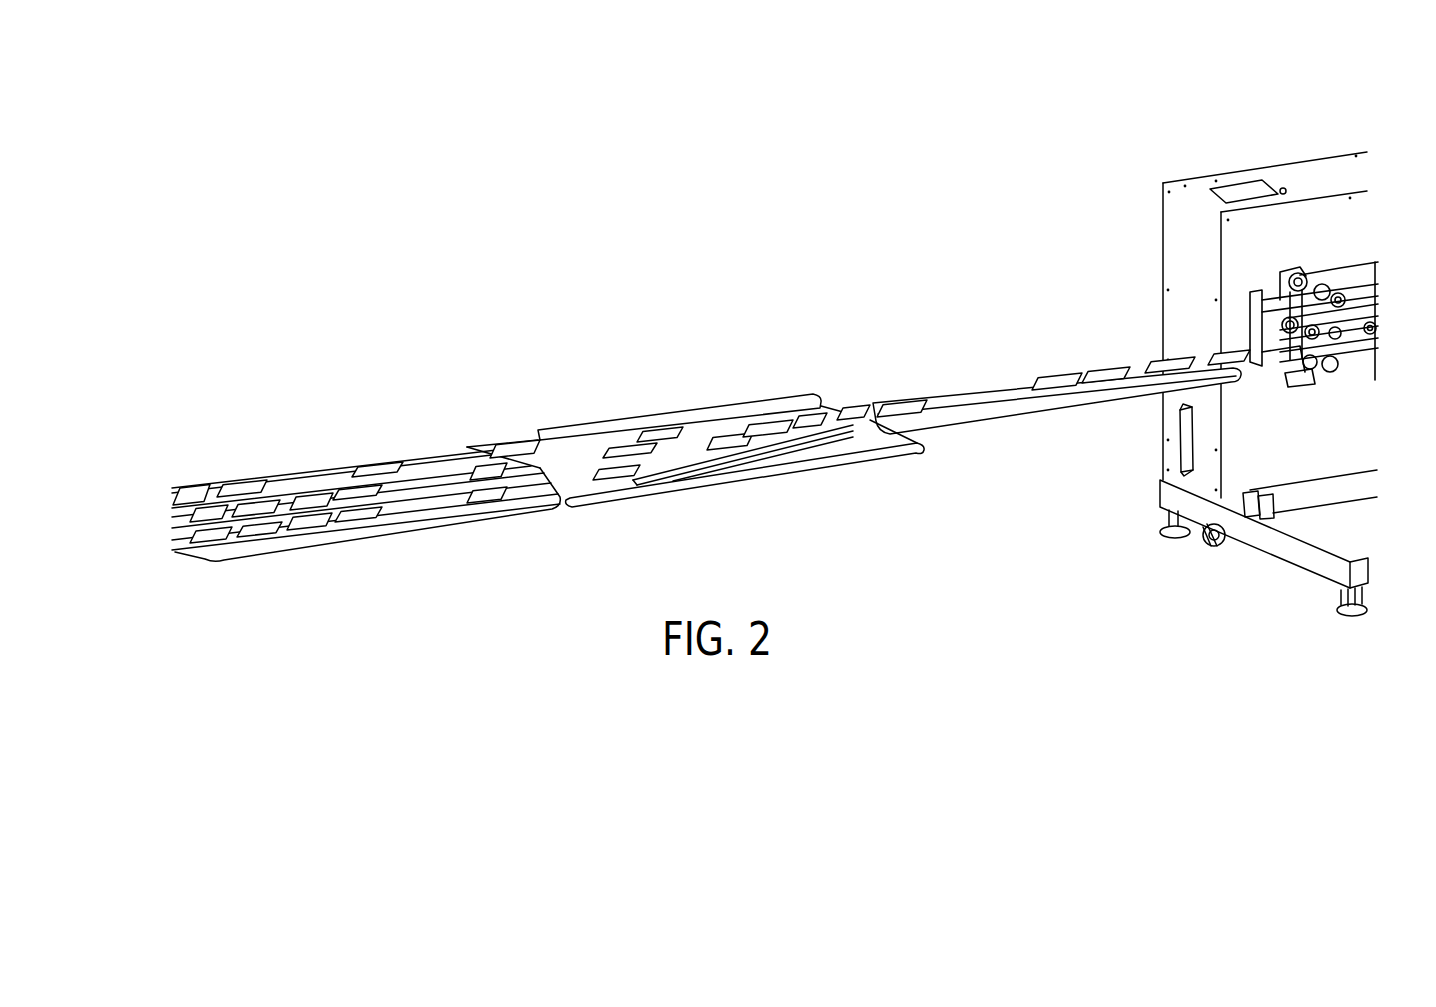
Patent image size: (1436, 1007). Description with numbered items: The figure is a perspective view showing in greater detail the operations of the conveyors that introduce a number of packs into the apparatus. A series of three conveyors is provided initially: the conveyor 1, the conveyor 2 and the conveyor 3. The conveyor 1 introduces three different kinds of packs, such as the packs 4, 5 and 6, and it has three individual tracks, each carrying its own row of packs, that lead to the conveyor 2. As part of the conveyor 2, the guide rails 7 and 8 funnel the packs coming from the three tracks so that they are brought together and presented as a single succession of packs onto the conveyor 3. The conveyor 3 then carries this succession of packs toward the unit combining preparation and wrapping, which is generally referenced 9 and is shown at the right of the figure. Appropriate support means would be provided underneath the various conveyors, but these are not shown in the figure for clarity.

The conveyor 1 is at (267, 454).
The conveyor 2 is at (659, 399).
The conveyor 3 is at (1003, 378).
The pack 4 is at (374, 467).
The pack 5 is at (505, 470).
The pack 6 is at (486, 502).
The guide rail 7 is at (713, 430).
The guide rail 8 is at (740, 452).
The unit combining preparation and wrapping 9 is at (1214, 150).